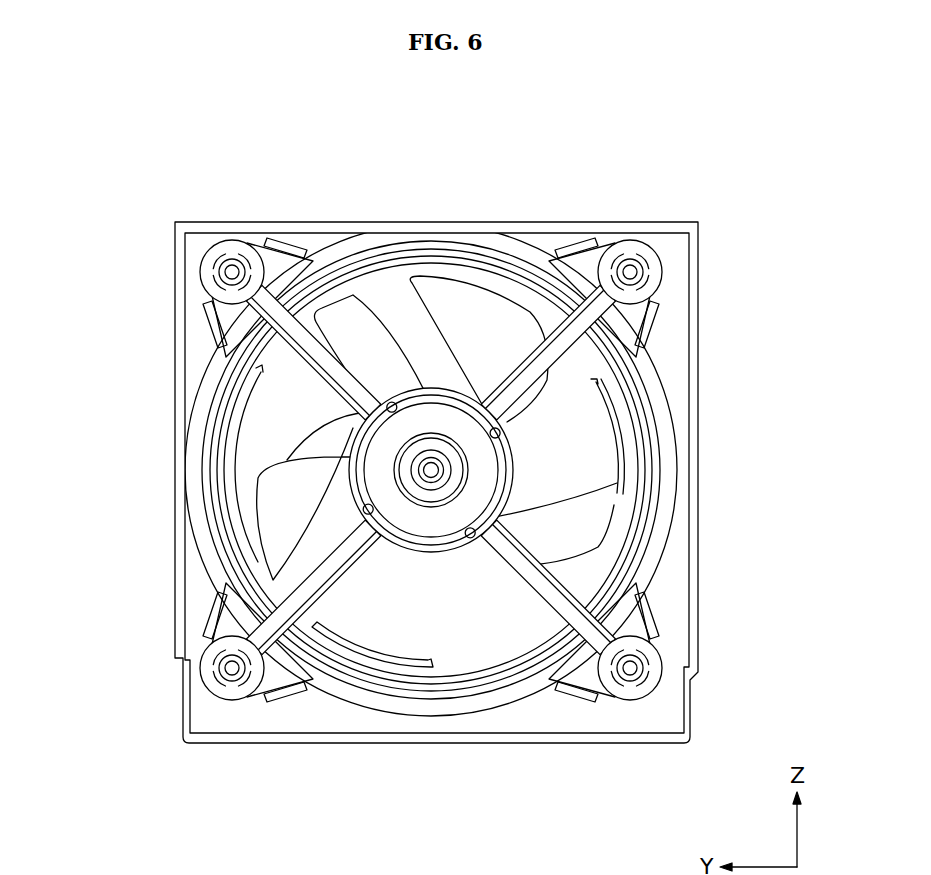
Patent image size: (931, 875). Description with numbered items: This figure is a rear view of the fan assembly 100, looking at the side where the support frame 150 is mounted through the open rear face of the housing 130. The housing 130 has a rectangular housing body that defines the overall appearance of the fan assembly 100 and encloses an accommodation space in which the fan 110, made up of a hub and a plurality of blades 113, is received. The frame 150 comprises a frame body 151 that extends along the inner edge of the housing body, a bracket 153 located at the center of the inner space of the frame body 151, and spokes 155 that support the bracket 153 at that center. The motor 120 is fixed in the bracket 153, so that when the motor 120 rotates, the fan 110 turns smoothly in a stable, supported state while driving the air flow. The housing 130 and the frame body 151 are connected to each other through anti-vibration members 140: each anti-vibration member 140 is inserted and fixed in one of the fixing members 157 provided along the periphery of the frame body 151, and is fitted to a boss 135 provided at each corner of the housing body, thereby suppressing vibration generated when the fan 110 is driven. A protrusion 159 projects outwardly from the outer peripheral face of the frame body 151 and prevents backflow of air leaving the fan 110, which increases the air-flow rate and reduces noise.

The fan assembly 100 is at (224, 105).
The fan 110 is at (597, 440).
The blades 113 is at (597, 440).
The motor 120 is at (473, 480).
The housing 130 is at (385, 233).
The bosses 135 is at (215, 272).
The anti-vibration members 140 is at (222, 262).
The frame 150 is at (384, 470).
The frame body 151 is at (218, 401).
The bracket 153 is at (355, 479).
The spokes 155 is at (308, 562).
The fixing members 157 is at (228, 622).
The protrusion 159 is at (195, 452).